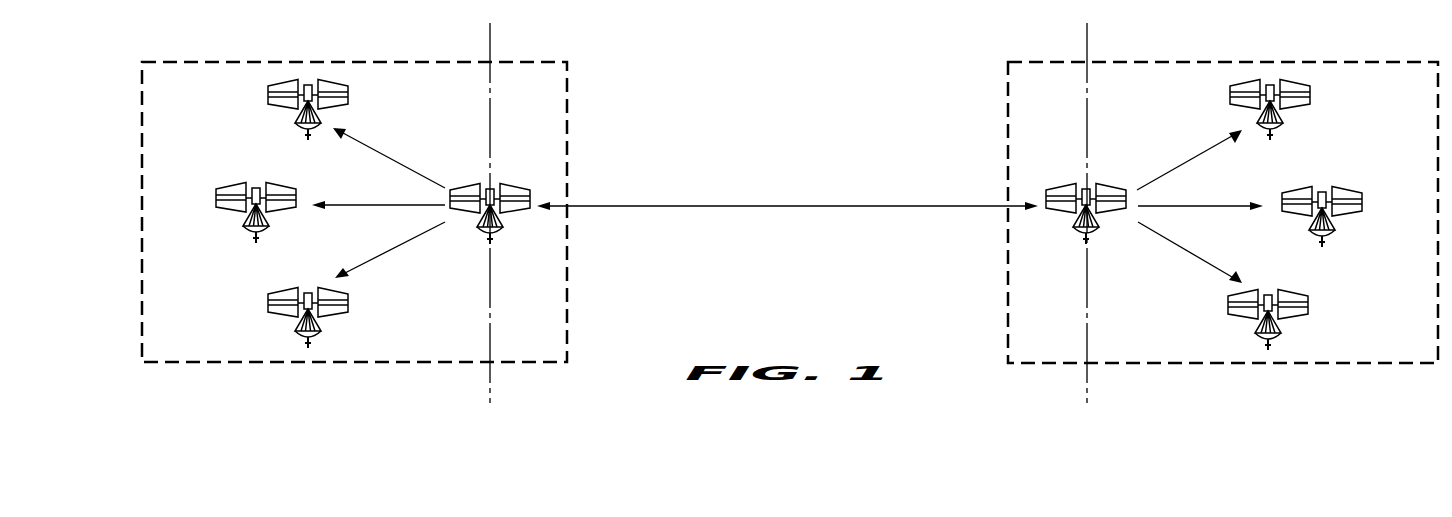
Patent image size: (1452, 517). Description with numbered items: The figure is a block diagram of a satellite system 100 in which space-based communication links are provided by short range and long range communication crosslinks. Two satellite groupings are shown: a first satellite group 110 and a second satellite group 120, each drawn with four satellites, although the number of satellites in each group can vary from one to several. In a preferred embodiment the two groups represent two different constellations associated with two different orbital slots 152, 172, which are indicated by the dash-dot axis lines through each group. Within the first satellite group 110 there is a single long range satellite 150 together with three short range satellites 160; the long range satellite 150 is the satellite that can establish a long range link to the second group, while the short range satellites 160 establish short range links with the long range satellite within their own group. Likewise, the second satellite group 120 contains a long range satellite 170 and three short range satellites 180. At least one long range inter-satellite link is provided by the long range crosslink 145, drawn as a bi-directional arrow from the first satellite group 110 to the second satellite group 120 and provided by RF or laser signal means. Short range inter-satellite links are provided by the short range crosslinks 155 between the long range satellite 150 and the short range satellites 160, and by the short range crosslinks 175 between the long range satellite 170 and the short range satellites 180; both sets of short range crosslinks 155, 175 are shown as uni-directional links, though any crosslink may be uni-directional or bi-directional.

The satellite system 100 is at (803, 325).
The first satellite group 110 is at (330, 62).
The second satellite group 120 is at (1258, 62).
The long range crosslink 145 is at (790, 204).
The long range satellite 150 is at (516, 186).
The orbital slot 152 is at (491, 332).
The short range crosslinks 155 is at (390, 158).
The short range satellites 160 is at (268, 90).
The long range satellite 170 is at (1050, 187).
The orbital slot 172 is at (1087, 331).
The short range crosslinks 175 is at (1186, 160).
The short range satellites 180 is at (1310, 95).